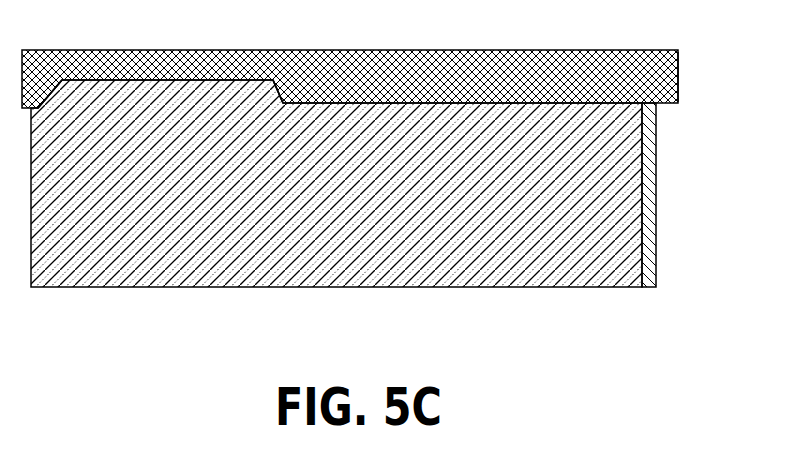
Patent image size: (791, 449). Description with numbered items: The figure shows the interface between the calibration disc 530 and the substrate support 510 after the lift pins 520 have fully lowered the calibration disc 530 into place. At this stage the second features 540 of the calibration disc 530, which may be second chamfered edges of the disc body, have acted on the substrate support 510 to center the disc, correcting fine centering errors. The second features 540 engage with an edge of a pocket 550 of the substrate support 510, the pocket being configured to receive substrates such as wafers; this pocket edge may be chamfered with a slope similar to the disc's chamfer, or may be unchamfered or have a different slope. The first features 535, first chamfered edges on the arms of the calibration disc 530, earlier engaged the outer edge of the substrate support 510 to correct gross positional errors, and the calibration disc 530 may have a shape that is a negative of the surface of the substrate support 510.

The substrate support 510 is at (532, 287).
The lift pins 520 is at (647, 287).
The calibration disc 530 is at (678, 71).
The first features 535 is at (56, 101).
The second features 540 is at (262, 90).
The pocket 550 is at (367, 74).